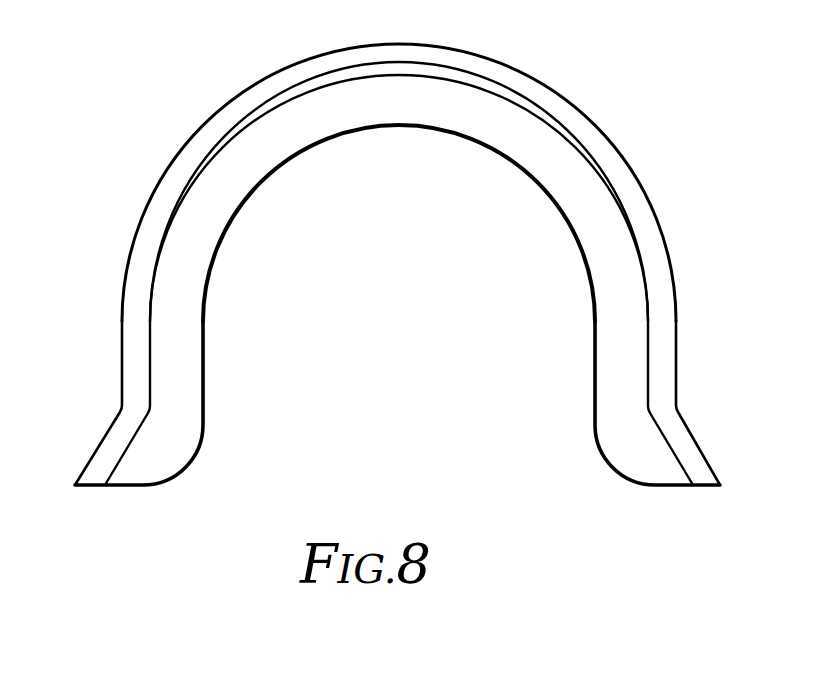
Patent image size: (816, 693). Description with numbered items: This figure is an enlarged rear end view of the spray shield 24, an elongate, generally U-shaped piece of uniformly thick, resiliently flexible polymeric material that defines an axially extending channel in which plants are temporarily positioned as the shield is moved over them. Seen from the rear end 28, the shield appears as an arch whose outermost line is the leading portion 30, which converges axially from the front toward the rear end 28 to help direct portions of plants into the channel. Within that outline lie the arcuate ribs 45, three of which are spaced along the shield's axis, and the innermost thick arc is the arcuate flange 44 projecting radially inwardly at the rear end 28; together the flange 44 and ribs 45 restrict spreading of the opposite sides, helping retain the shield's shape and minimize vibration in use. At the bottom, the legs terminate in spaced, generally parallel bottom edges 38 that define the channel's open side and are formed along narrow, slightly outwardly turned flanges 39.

The spray shield 24 is at (413, 270).
The rear end 28 is at (595, 383).
The leading portion 30 is at (665, 260).
The bottom edges 38 is at (105, 485).
The flanges 39 is at (688, 437).
The arcuate flange 44 is at (387, 117).
The arcuate ribs 45 is at (437, 65).